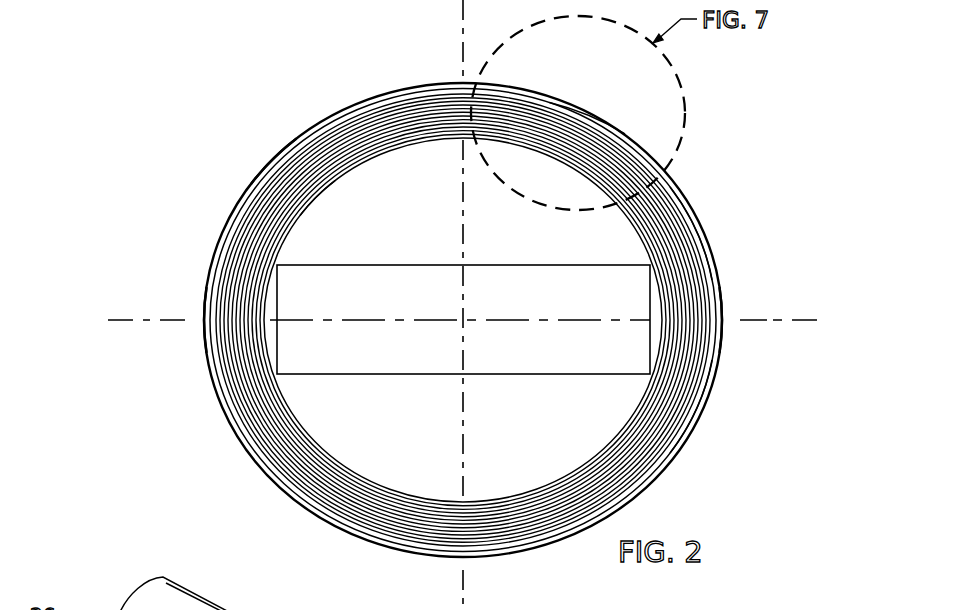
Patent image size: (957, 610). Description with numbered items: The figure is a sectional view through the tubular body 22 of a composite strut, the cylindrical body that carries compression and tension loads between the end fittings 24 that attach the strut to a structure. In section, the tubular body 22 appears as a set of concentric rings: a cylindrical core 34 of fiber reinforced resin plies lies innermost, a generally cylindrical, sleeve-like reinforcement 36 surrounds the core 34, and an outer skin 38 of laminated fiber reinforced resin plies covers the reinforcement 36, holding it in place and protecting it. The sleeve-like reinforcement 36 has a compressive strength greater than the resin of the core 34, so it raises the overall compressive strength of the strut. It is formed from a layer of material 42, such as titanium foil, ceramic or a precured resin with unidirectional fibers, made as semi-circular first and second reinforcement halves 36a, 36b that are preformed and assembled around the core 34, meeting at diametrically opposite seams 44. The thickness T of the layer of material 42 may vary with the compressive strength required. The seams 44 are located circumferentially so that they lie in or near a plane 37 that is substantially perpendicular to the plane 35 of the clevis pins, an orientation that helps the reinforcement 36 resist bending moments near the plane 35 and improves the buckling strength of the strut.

The tubular body 22 is at (274, 86).
The end fitting 24 is at (416, 224).
The cylindrical core 34 is at (372, 472).
The plane of the clevis pins 35 is at (462, 32).
The sleeve-like reinforcement 36 is at (222, 240).
The first reinforcement half 36a is at (709, 250).
The second reinforcement half 36b is at (709, 390).
The plane 37 is at (122, 322).
The outer skin 38 is at (386, 97).
The layer of material 42 is at (546, 99).
The seam 44 is at (201, 315).
The thickness T is at (338, 207).